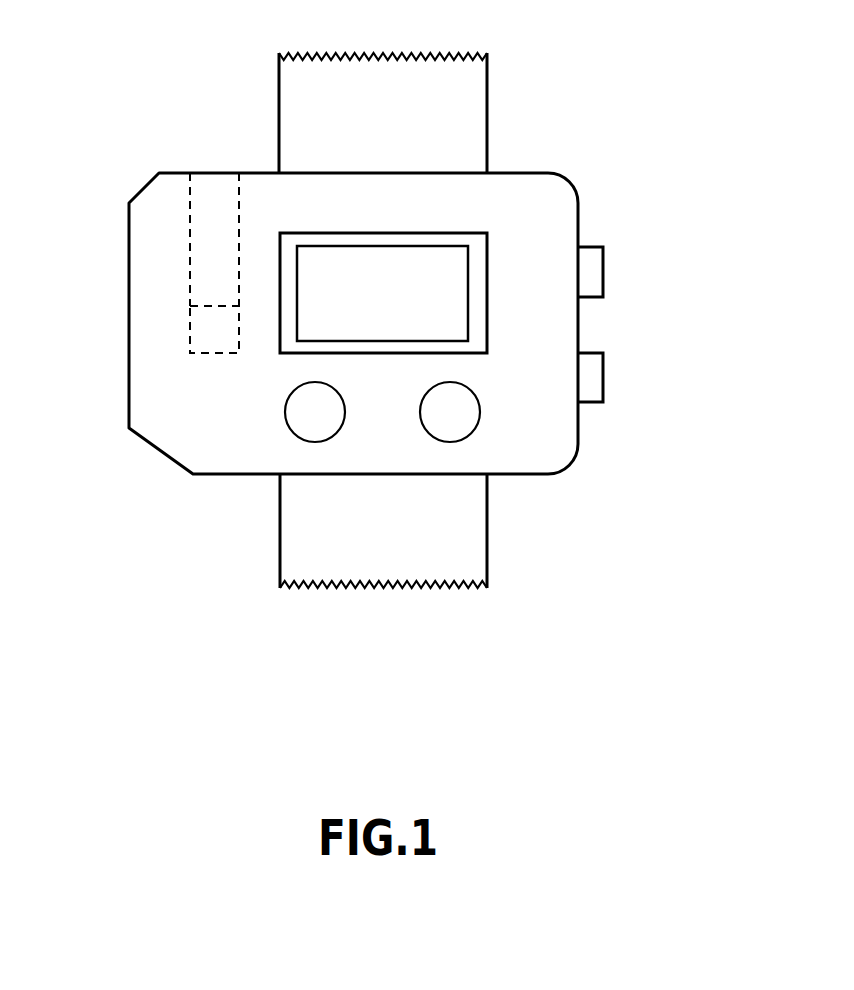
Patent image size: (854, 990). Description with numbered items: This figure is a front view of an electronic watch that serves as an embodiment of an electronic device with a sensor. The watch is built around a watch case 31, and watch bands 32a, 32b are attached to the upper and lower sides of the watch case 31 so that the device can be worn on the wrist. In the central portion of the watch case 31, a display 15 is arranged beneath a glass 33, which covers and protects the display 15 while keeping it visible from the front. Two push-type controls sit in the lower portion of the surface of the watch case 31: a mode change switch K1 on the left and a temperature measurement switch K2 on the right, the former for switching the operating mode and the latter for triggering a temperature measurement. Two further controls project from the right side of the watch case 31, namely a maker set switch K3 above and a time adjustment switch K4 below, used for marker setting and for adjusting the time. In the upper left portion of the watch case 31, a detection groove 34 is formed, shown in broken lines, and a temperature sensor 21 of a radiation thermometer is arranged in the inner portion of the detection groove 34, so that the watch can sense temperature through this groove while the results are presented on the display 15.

The watch case 31 is at (162, 438).
The watch band 32a is at (279, 97).
The watch band 32b is at (297, 531).
The glass 33 is at (465, 237).
The display 15 is at (457, 277).
The detection groove 34 is at (190, 219).
The temperature sensor 21 is at (190, 333).
The mode change switch K1 is at (300, 441).
The temperature measurement switch K2 is at (470, 436).
The maker set switch K3 is at (603, 270).
The time adjustment switch K4 is at (603, 373).